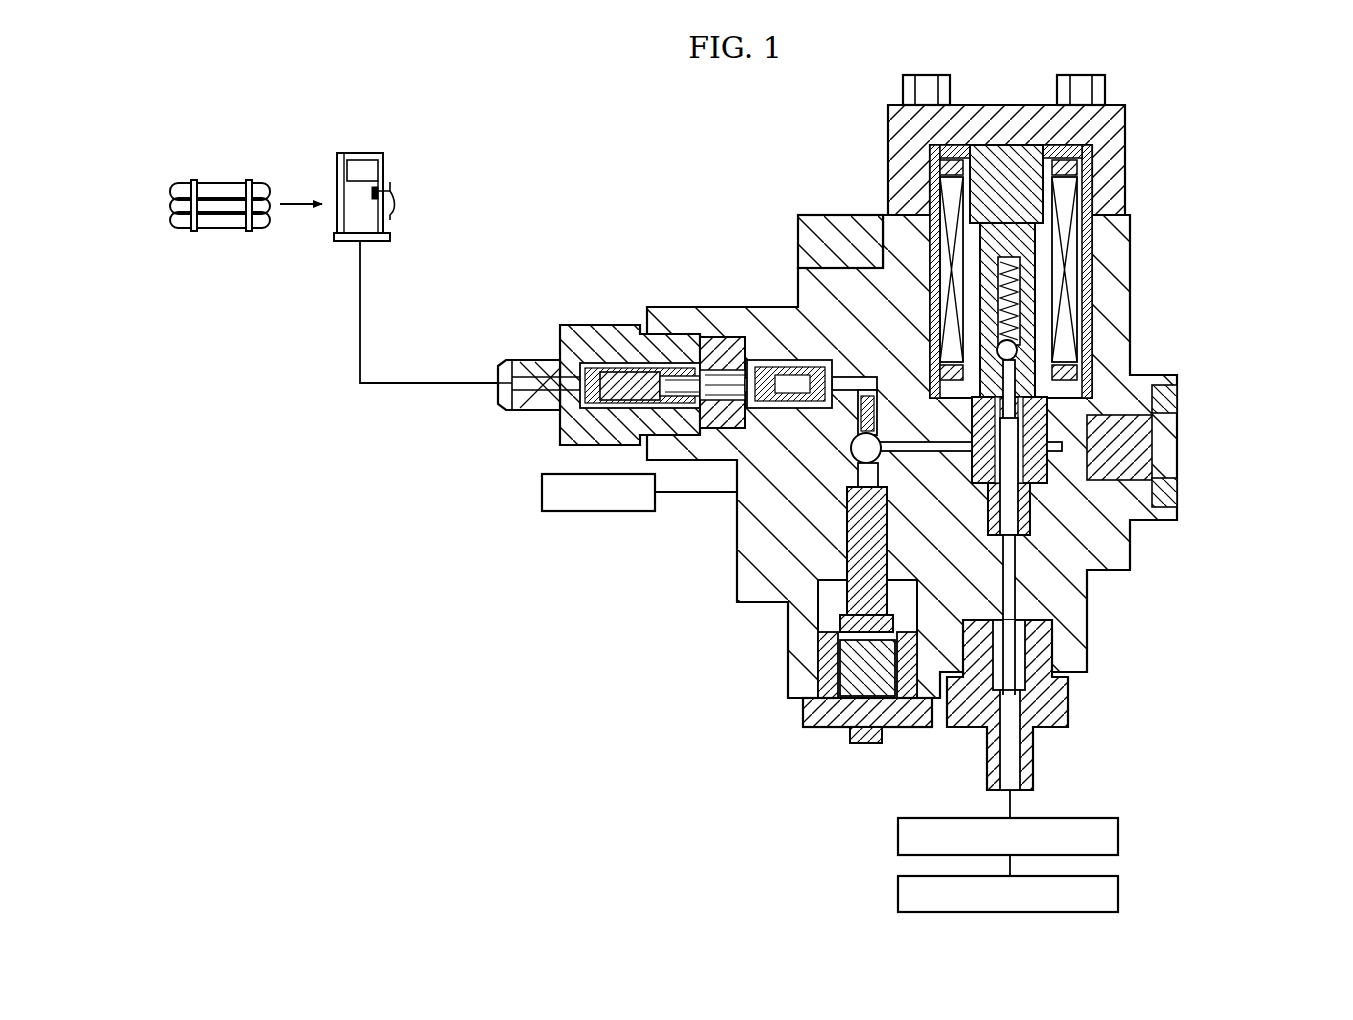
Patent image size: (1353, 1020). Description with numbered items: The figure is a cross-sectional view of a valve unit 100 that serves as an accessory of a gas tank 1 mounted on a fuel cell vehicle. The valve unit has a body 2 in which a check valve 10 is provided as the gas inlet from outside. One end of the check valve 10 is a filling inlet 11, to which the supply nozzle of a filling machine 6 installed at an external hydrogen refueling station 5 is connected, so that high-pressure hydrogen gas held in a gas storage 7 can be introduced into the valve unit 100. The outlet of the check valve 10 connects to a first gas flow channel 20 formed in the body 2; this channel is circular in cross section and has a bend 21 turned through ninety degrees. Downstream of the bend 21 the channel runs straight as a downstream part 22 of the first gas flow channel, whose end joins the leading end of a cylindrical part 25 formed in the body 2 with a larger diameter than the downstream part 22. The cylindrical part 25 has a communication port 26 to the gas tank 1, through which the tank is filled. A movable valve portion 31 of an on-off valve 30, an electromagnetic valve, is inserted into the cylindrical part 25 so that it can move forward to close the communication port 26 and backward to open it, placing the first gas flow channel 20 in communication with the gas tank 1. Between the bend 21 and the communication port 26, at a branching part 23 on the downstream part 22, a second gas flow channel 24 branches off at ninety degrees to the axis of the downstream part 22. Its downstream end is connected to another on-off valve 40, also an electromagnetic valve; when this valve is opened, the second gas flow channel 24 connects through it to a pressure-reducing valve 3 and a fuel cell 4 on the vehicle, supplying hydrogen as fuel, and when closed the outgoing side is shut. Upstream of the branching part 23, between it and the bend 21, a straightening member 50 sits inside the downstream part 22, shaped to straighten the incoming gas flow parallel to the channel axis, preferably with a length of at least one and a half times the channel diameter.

The gas tank 1 is at (542, 493).
The body 2 is at (1118, 250).
The pressure-reducing valve 3 is at (1118, 837).
The fuel cell 4 is at (1118, 894).
The hydrogen refueling station 5 is at (274, 284).
The filling machine 6 is at (360, 153).
The gas storage 7 is at (220, 183).
The check valve 10 is at (608, 320).
The filling inlet 11 is at (523, 360).
The first gas flow channel 20 is at (843, 368).
The bend 21 is at (868, 470).
The downstream part of the first gas flow channel 22 is at (848, 458).
The branching part 23 is at (1020, 507).
The second gas flow channel 24 is at (918, 443).
The cylindrical part 25 is at (838, 590).
The communication port 26 is at (845, 550).
The on-off valve 30 is at (790, 728).
The movable valve portion 31 is at (1015, 560).
The on-off valve 40 is at (1098, 322).
The straightening member 50 is at (840, 440).
The valve unit 100 is at (1209, 133).